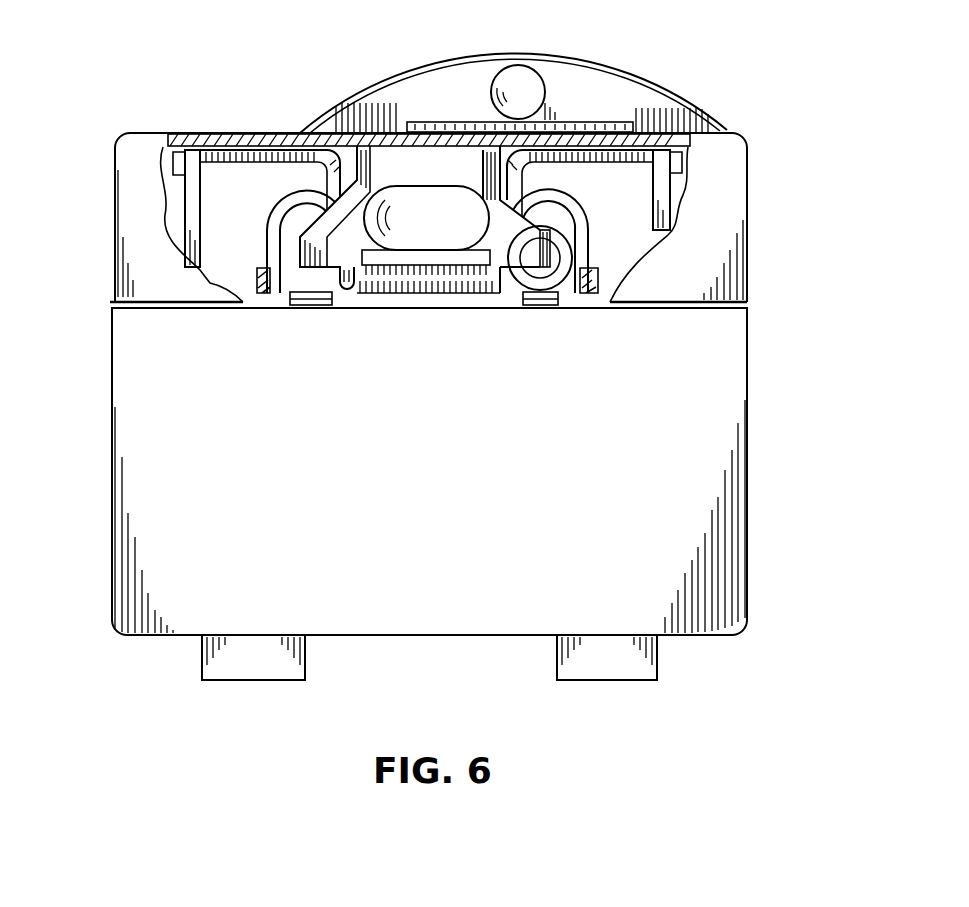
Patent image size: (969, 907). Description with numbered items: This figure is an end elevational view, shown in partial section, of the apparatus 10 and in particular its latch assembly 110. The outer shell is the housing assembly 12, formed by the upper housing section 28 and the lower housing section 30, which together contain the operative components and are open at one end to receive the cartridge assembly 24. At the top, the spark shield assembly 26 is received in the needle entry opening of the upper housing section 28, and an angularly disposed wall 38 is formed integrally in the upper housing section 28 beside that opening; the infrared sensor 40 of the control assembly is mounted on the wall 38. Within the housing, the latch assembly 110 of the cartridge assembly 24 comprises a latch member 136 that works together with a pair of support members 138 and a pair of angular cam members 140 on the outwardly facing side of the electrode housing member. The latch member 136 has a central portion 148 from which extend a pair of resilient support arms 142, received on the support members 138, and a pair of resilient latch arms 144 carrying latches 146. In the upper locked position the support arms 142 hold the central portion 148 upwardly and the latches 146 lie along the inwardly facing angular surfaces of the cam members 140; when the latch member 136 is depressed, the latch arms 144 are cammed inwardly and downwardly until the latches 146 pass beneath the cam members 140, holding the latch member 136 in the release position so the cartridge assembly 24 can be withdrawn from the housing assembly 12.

The apparatus 10 is at (795, 364).
The housing assembly 12 is at (619, 666).
The cartridge assembly 24 is at (697, 463).
The spark shield assembly 26 is at (633, 118).
The upper housing section 28 is at (748, 258).
The lower housing section 30 is at (653, 650).
The angularly disposed wall 38 is at (627, 95).
The infrared sensor 40 is at (533, 78).
The latch assembly 110 is at (401, 174).
The latch member 136 is at (422, 165).
The support members 138 is at (680, 203).
The angular cam members 140 is at (257, 278).
The resilient support arms 142 is at (248, 152).
The resilient latch arms 144 is at (267, 228).
The latches 146 is at (265, 268).
The central portion 148 is at (343, 233).